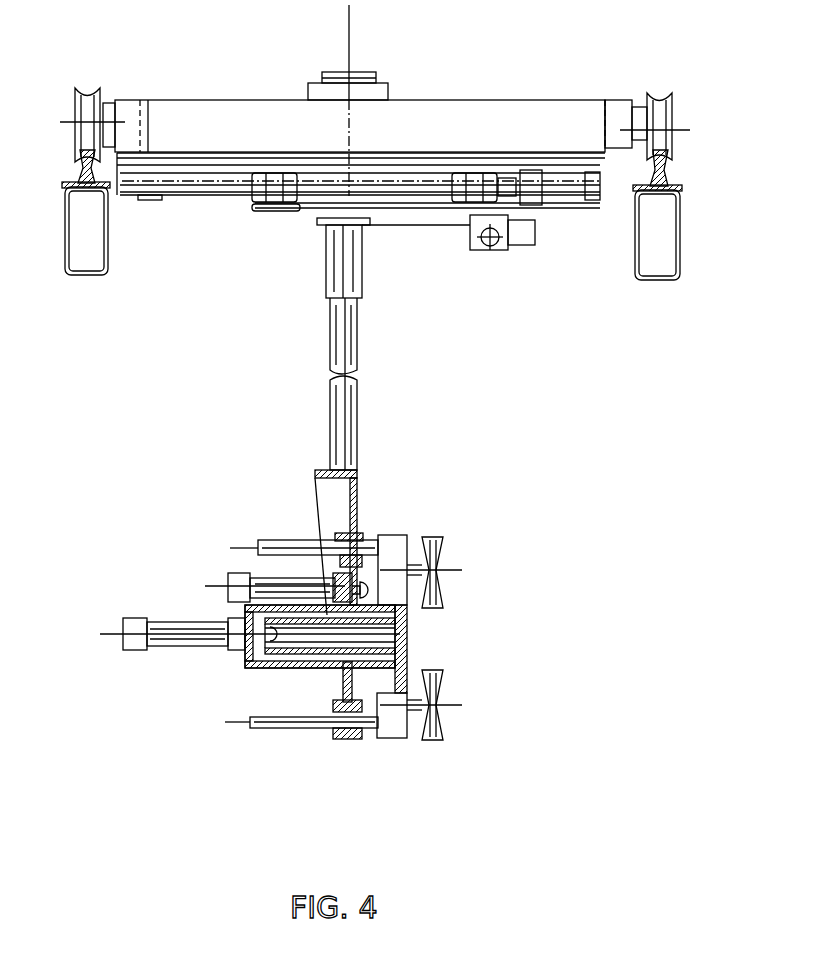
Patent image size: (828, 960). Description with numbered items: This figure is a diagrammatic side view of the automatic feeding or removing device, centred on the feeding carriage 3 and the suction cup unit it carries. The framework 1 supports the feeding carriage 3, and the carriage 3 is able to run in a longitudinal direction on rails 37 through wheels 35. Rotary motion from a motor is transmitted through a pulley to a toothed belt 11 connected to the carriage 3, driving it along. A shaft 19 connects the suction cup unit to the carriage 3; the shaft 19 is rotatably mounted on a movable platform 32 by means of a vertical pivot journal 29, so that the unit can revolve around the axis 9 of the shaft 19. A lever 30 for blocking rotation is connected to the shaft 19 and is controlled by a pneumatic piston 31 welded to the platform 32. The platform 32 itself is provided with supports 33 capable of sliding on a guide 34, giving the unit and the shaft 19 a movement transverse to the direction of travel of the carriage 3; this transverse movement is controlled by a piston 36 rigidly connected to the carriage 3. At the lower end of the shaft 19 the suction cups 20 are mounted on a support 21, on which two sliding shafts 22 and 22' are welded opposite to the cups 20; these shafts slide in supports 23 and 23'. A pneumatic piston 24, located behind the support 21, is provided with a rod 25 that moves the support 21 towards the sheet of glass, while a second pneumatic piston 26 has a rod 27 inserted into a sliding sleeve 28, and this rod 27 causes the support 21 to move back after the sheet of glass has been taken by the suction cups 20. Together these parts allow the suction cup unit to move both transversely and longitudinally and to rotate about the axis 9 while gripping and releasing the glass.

The framework 1 is at (664, 250).
The feeding carriage 3 is at (462, 115).
The axis 9 is at (350, 22).
The toothed belt 11 is at (372, 72).
The shaft 19 is at (350, 340).
The suction cups 20 is at (440, 552).
The support 21 is at (398, 535).
The sliding shaft 22 is at (302, 527).
The sliding shaft 22' is at (288, 737).
The support 23 is at (352, 726).
The support 23' is at (359, 542).
The pneumatic piston 24 is at (240, 585).
The rod 25 is at (378, 588).
The pneumatic piston 26 is at (135, 640).
The rod 27 is at (268, 668).
The sliding sleeve 28 is at (380, 627).
The vertical pivot journal 29 is at (335, 272).
The lever 30 is at (533, 238).
The pneumatic piston 31 is at (492, 256).
The movable platform 32 is at (258, 210).
The supports 33 is at (475, 178).
The guide 34 is at (188, 190).
The wheels 35 is at (665, 100).
The piston 36 is at (575, 196).
The rails 37 is at (670, 168).